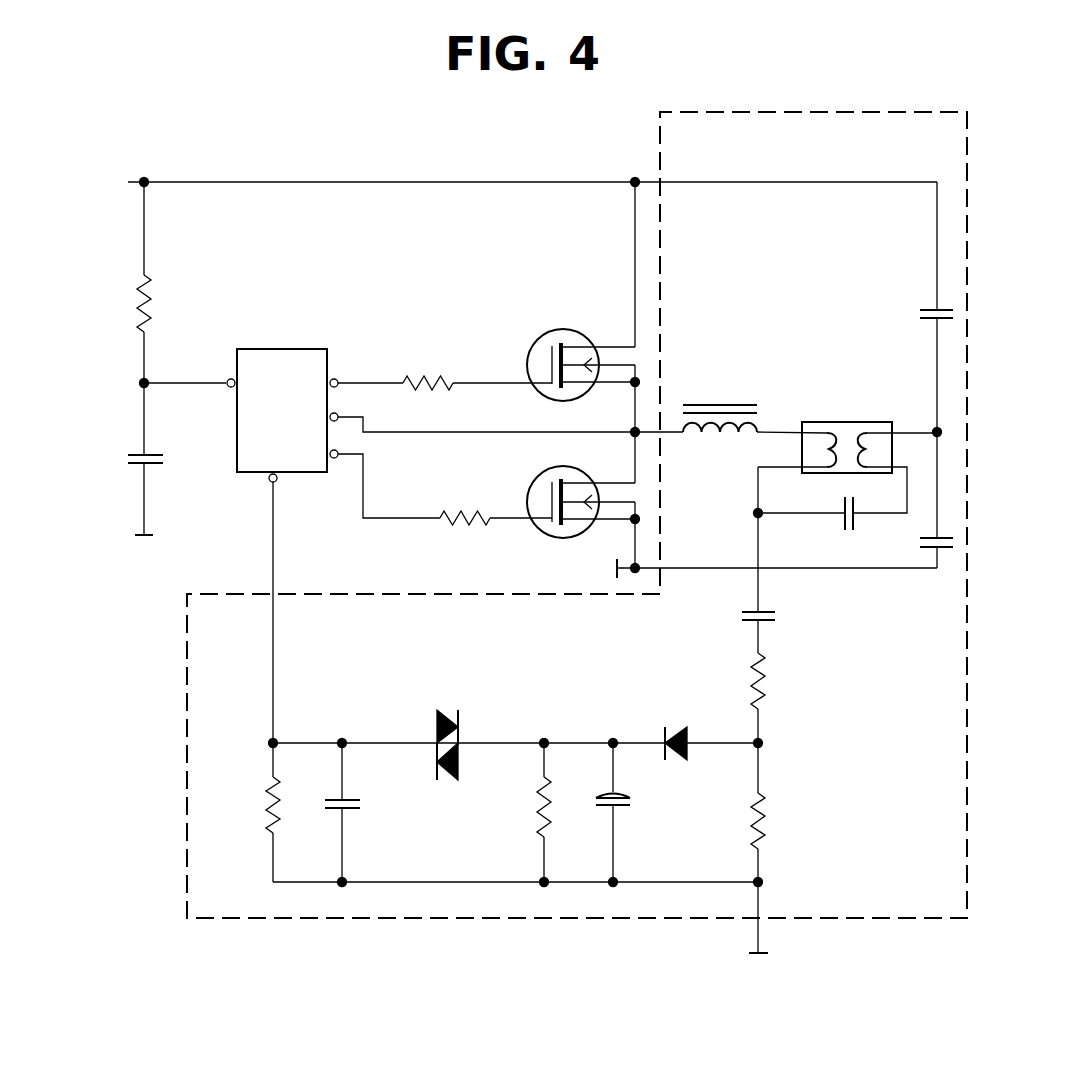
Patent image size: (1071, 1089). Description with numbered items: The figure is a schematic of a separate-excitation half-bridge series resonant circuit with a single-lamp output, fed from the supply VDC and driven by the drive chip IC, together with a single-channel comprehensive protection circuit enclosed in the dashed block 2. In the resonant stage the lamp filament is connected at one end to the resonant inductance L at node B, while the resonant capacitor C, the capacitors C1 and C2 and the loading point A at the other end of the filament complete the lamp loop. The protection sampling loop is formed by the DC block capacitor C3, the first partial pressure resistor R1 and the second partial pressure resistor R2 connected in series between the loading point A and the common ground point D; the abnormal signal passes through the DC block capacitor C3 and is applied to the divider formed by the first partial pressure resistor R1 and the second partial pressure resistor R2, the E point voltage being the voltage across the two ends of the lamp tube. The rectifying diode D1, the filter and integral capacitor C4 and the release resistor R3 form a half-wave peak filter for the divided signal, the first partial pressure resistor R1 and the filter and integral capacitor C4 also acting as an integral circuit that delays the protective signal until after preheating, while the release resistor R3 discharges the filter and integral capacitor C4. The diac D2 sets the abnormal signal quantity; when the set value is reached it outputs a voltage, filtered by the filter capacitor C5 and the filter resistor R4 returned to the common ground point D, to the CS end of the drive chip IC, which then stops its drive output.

The control circuit block 2 is at (178, 893).
The DC supply voltage input VDC is at (117, 173).
The drive chip IC is at (282, 400).
The capacitor C1 is at (928, 307).
The capacitor C2 is at (931, 500).
The DC block capacitor C3 is at (768, 622).
The filter and integral capacitor C4 is at (629, 812).
The filter capacitor C5 is at (350, 812).
The resonant capacitor C / node C is at (222, 727).
The resonant inductance L is at (720, 406).
The first partial pressure resistor R1 is at (774, 698).
The second partial pressure resistor R2 is at (774, 812).
The release resistor R3 is at (527, 812).
The filter resistor R4 is at (256, 812).
The rectifying diode D1 is at (682, 731).
The diac D2 is at (427, 745).
The loading point A is at (756, 513).
The node B is at (934, 430).
The common ground point D is at (763, 921).
The E point E is at (760, 645).